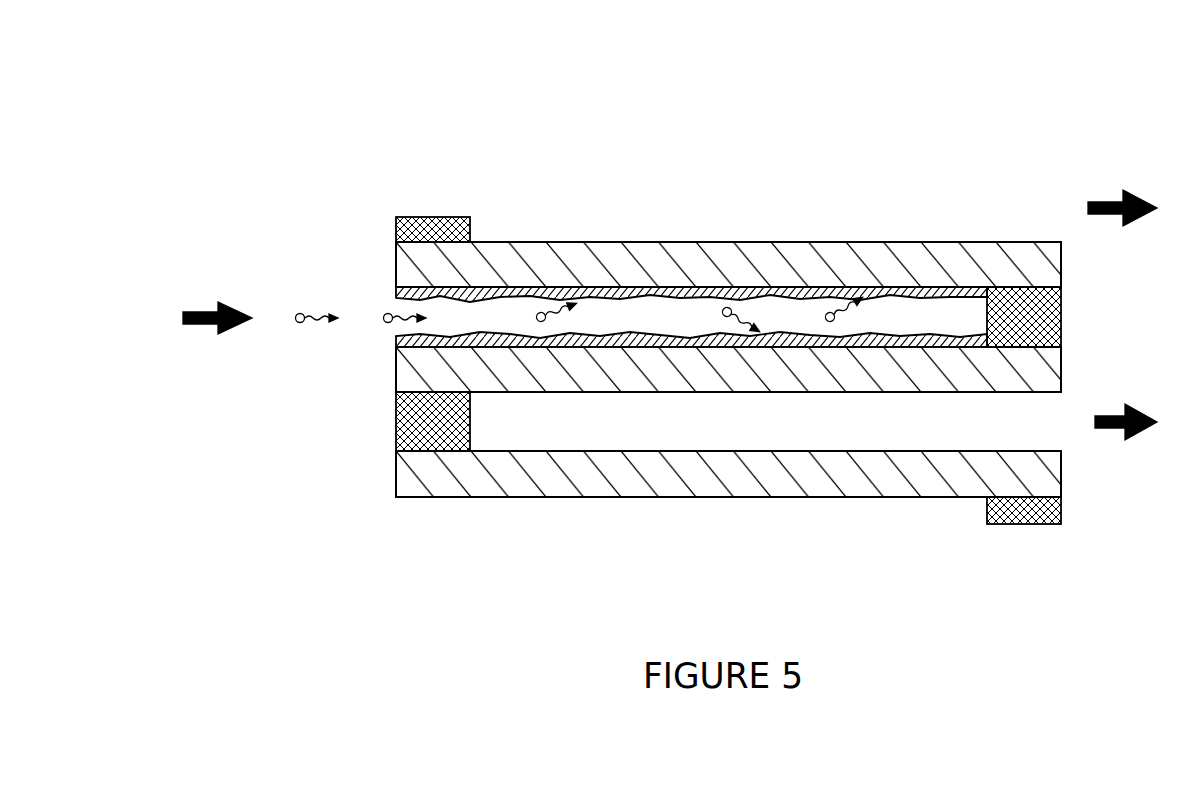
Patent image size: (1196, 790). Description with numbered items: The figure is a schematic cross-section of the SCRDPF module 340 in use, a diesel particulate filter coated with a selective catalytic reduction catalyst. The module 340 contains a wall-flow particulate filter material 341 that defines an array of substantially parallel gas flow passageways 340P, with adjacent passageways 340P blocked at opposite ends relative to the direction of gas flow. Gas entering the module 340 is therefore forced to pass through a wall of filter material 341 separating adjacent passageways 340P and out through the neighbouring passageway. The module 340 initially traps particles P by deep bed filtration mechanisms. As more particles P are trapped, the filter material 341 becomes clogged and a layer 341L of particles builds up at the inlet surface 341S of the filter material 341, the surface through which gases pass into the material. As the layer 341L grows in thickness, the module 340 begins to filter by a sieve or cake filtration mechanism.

The SCRDPF module 340 is at (682, 317).
The particulate filter material 341 is at (427, 265).
The gas flow passageways 340P is at (897, 315).
The layer of particles 341L is at (418, 337).
The inlet surface 341S is at (527, 348).
The particles P is at (384, 316).